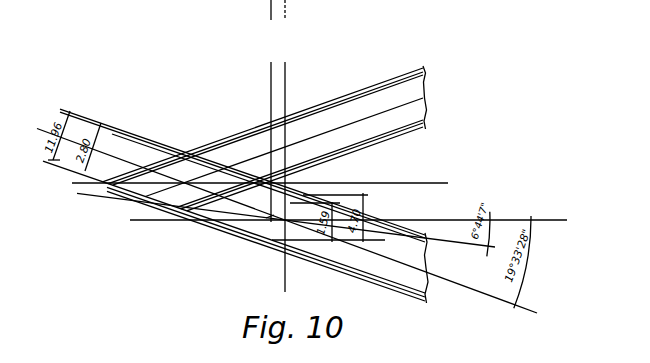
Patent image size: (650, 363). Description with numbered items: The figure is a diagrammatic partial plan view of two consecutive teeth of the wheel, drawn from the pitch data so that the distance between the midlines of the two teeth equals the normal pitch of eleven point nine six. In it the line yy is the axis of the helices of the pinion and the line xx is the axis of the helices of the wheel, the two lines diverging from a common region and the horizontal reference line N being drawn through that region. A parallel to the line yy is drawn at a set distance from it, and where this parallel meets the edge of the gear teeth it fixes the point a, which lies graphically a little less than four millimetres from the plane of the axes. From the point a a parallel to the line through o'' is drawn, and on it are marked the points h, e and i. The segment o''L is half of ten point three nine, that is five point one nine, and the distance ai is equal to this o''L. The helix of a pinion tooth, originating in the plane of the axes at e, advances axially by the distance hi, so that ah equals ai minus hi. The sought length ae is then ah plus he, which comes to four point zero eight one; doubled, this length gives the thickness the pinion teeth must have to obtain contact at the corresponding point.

The N-N reference line N is at (351, 220).
The axis of the helices of the wheel x is at (287, 224).
The axis of the helices of the pinion y is at (283, 222).
The point i is at (277, 207).
The point o'' o is at (297, 211).
The point e is at (260, 218).
The point h is at (280, 233).
The point L is at (293, 233).
The point a is at (259, 254).